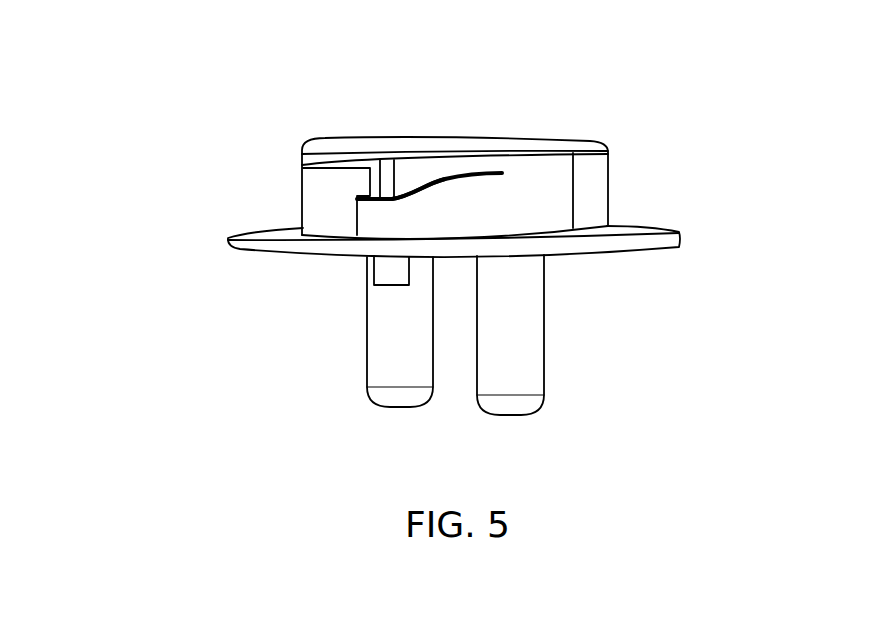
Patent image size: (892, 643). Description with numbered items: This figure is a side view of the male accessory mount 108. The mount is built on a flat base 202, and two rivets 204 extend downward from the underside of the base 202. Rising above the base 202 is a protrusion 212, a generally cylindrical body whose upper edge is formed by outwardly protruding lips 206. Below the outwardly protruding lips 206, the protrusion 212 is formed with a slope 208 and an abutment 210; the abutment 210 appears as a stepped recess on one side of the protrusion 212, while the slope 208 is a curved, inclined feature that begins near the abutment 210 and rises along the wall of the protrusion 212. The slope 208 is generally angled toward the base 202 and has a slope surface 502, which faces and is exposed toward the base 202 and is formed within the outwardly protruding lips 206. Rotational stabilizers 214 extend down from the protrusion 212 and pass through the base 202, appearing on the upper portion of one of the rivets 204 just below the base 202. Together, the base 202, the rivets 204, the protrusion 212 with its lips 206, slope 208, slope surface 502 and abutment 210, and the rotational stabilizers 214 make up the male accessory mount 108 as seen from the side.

The male accessory mount 108 is at (194, 76).
The base 202 is at (672, 240).
The rivets 204 is at (522, 343).
The outwardly protruding lips 206 is at (620, 141).
The slope 208 is at (422, 166).
The abutment 210 is at (367, 183).
The protrusion 212 is at (525, 180).
The rotational stabilizers 214 is at (393, 275).
The slope surface 502 is at (418, 191).